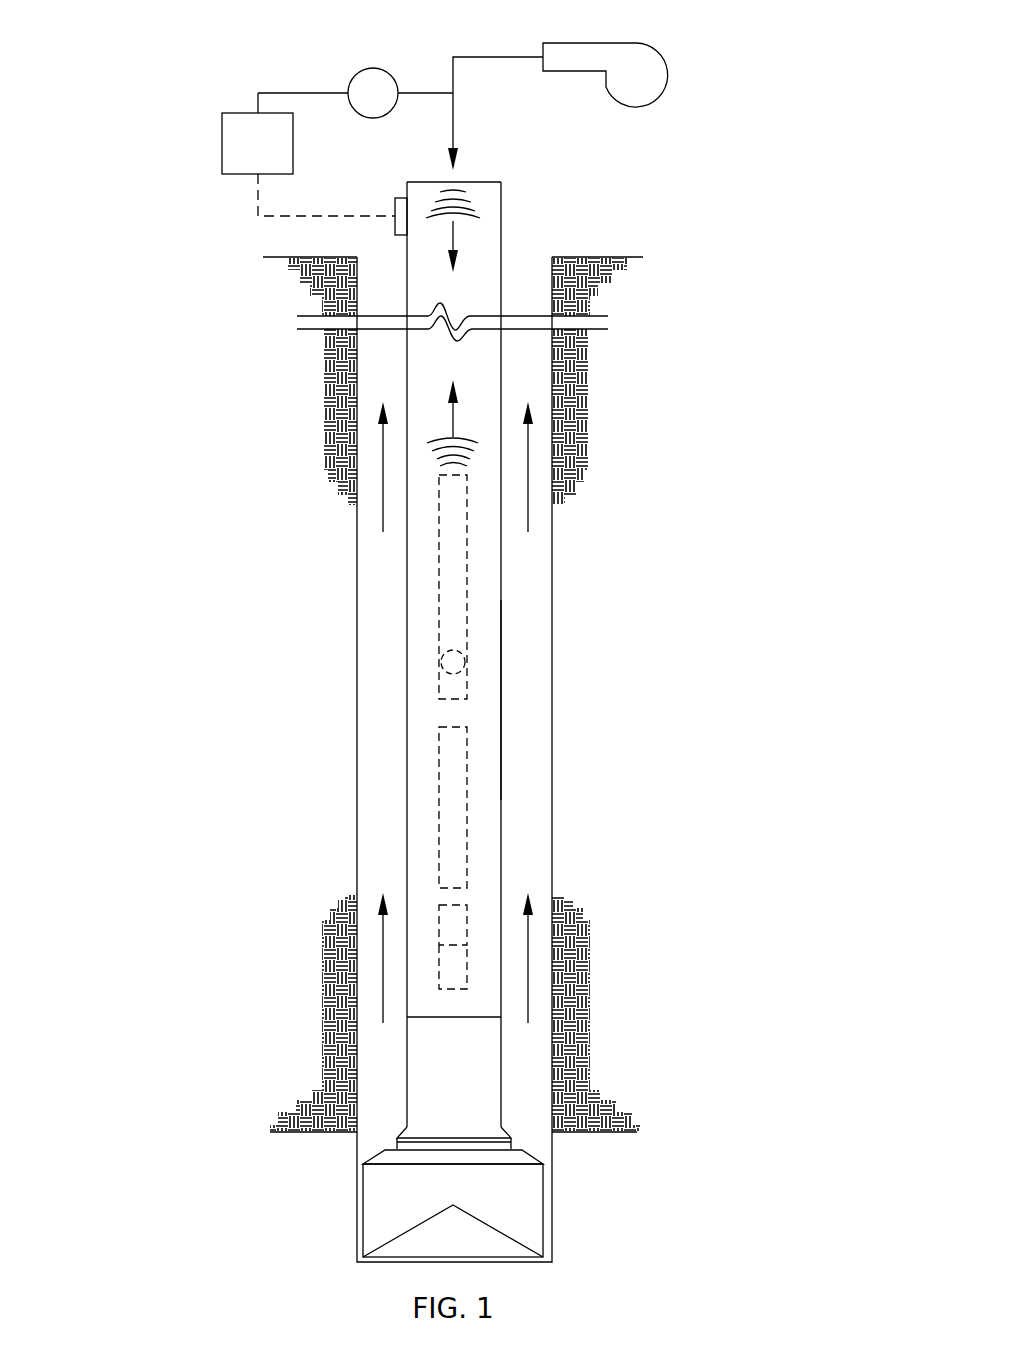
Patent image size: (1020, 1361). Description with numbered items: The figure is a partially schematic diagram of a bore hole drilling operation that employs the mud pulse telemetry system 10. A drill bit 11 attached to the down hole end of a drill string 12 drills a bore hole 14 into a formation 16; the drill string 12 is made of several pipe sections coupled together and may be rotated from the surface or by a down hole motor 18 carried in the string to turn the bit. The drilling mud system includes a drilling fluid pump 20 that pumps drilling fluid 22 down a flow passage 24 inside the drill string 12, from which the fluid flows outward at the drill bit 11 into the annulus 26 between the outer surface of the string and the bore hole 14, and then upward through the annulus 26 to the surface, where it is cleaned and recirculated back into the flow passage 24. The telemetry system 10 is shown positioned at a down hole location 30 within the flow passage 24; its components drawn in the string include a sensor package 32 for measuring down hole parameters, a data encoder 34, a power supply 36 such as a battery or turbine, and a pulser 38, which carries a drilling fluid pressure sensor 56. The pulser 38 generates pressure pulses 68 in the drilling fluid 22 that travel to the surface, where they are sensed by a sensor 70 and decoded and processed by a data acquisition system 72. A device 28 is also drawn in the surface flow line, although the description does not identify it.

The mud pulse telemetry system 10 is at (172, 252).
The drill bit 11 is at (375, 1193).
The drill string 12 is at (501, 702).
The bore hole 14 is at (552, 562).
The formation 16 is at (575, 393).
The down hole motor 18 is at (487, 1076).
The drilling fluid pump 20 is at (655, 73).
The drilling fluid 22 is at (453, 123).
The flow passage 24 is at (487, 252).
The annulus 26 is at (527, 848).
The surface pressure sensor 28 is at (373, 77).
The down hole location 30 is at (578, 797).
The sensor package 32 is at (442, 968).
The data encoder 34 is at (452, 932).
The power supply 36 is at (450, 770).
The pulser 38 is at (439, 606).
The drilling fluid pressure sensor 56 is at (445, 665).
The pressure pulses 68 is at (432, 450).
The sensor 70 is at (395, 210).
The data acquisition system 72 is at (227, 130).